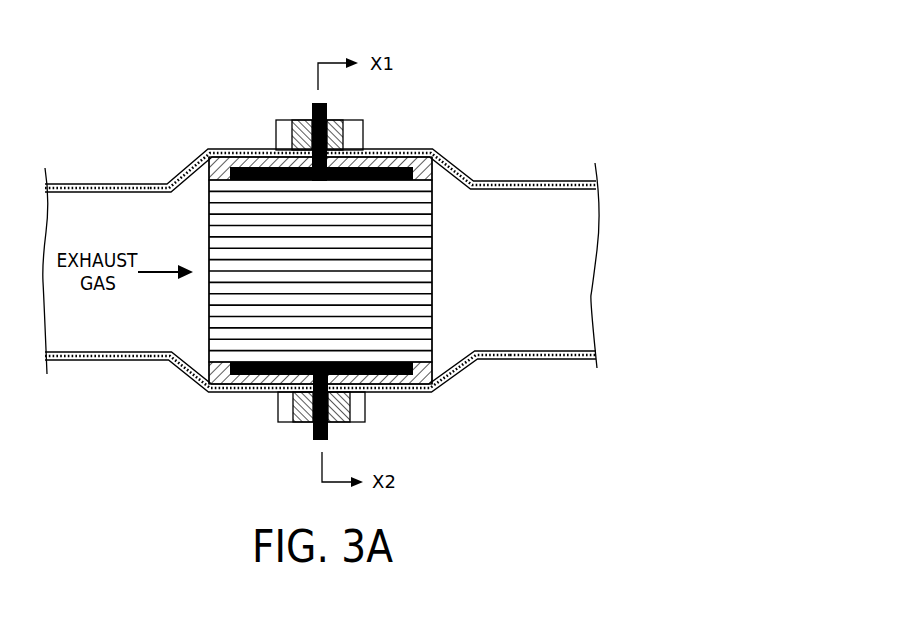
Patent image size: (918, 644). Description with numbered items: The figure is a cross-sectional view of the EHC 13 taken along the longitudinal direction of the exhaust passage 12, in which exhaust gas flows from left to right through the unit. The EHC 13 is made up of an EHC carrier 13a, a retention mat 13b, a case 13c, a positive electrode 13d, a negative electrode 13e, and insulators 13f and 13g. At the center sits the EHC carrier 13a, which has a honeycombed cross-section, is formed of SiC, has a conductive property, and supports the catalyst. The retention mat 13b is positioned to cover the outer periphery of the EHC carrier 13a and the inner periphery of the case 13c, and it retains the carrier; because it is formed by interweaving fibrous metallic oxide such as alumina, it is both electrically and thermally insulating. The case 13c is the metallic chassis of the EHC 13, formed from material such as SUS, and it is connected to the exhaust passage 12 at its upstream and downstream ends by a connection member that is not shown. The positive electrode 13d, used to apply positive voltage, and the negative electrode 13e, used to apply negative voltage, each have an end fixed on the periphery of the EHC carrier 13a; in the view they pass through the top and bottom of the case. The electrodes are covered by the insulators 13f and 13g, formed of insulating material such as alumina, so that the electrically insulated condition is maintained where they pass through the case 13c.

The exhaust passage 12 is at (88, 184).
The EHC 13 is at (421, 57).
The EHC carrier 13a is at (220, 249).
The retention mat 13b is at (434, 157).
The case 13c is at (208, 150).
The positive electrode 13d is at (328, 108).
The negative electrode 13e is at (329, 430).
The insulator 13f is at (305, 123).
The insulator 13g is at (307, 416).